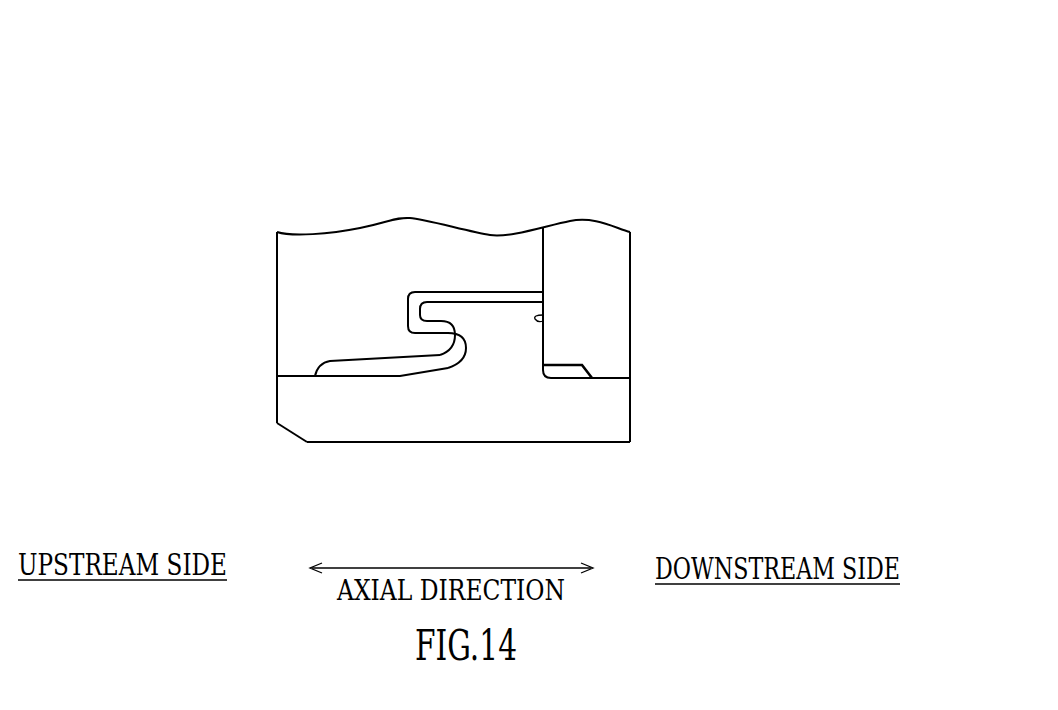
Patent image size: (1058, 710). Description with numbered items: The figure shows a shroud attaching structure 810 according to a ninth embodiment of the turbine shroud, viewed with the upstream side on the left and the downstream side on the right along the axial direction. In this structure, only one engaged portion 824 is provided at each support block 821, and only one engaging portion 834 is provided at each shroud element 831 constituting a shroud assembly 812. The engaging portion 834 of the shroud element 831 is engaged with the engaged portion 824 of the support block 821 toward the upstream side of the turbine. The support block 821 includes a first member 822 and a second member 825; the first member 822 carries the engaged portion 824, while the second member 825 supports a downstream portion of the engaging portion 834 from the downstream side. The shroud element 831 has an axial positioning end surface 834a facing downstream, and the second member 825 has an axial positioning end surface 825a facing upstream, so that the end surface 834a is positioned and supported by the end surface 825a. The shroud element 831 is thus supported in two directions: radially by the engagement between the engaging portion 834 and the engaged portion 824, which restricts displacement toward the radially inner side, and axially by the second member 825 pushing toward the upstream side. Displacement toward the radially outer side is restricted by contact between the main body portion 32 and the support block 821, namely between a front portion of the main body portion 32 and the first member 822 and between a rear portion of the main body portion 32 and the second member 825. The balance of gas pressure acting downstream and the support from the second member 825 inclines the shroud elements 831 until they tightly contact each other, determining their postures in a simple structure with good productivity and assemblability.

The shroud attaching structure 810 is at (738, 129).
The support block 821 is at (628, 127).
The first member 822 is at (507, 248).
The second member 825 is at (592, 242).
The axial positioning end surface 825a is at (553, 324).
The engaging portion 834 is at (457, 315).
The axial positioning end surface 834a is at (542, 343).
The shroud element 831 is at (277, 401).
The shroud assembly 812 is at (321, 446).
The engaged portion 824 is at (428, 348).
The main body portion 32 is at (469, 423).